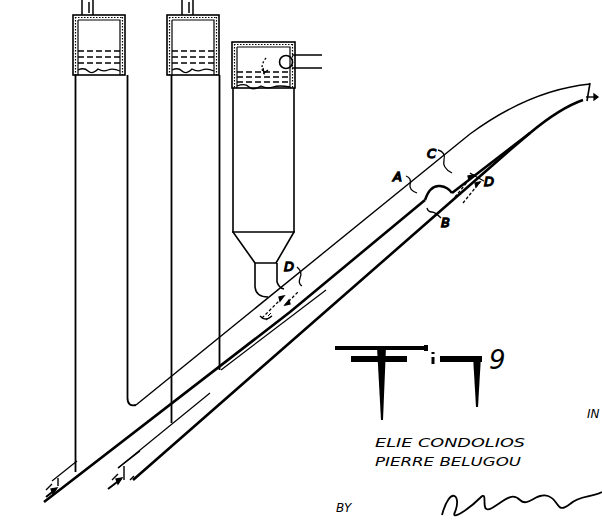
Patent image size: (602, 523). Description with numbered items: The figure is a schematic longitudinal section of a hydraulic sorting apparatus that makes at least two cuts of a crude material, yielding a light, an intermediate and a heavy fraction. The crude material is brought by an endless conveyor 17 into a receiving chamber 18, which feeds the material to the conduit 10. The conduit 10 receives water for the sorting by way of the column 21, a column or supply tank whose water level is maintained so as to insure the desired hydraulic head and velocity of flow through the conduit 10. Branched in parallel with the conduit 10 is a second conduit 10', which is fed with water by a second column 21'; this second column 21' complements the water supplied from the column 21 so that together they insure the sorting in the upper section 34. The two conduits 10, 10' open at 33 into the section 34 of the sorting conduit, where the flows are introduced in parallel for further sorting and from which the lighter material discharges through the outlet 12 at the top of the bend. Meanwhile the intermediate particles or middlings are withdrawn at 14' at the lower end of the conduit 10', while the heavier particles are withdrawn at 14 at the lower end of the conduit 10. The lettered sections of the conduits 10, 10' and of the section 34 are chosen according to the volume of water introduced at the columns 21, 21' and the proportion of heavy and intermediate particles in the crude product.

The conduit 10 is at (303, 269).
The conduit 10' is at (313, 301).
The pipe outlet 12 is at (580, 87).
The withdrawal point 14 is at (61, 470).
The withdrawal point 14' is at (147, 470).
The endless conveyor 17 is at (306, 52).
The receiving chamber 18 is at (288, 134).
The column 21 is at (112, 236).
The second column 21' is at (184, 211).
The junction 33 is at (449, 201).
The upper section 34 is at (507, 87).